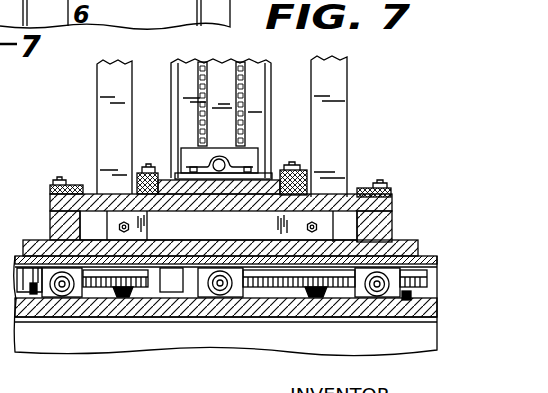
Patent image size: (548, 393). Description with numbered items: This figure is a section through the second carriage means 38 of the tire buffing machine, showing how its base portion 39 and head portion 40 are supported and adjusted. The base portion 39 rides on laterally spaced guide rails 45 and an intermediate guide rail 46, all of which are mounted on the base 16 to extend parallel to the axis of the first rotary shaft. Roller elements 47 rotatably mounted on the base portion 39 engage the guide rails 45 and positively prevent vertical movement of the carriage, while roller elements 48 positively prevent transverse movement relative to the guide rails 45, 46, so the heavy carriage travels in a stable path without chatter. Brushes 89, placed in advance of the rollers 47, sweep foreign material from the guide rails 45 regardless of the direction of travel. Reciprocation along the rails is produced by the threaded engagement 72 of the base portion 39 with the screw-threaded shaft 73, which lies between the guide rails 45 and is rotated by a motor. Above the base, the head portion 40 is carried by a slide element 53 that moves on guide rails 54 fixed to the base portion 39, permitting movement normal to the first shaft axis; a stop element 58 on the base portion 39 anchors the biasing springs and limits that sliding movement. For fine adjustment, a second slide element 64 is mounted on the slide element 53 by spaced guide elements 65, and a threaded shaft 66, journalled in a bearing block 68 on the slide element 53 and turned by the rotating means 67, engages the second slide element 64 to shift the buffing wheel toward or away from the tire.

The base 16 is at (208, 351).
The second carriage means 38 is at (378, 98).
The base portion 39 is at (398, 212).
The head portion 40 is at (349, 127).
The guide rails 45 is at (15, 258).
The guide rail 46 is at (16, 300).
The roller elements 47 is at (0, 122).
The roller elements 48 is at (112, 290).
The slide element 53 is at (253, 211).
The guide rails 54 is at (64, 180).
The stop element 58 is at (319, 212).
The second slide element 64 is at (254, 185).
The guide elements 65 is at (134, 183).
The threaded shaft 66 is at (222, 163).
The means for rotating 67 is at (244, 72).
The bearing block 68 is at (186, 150).
The threaded engagement 72 is at (183, 292).
The screw-threaded shaft 73 is at (148, 297).
The brushes 89 is at (34, 296).